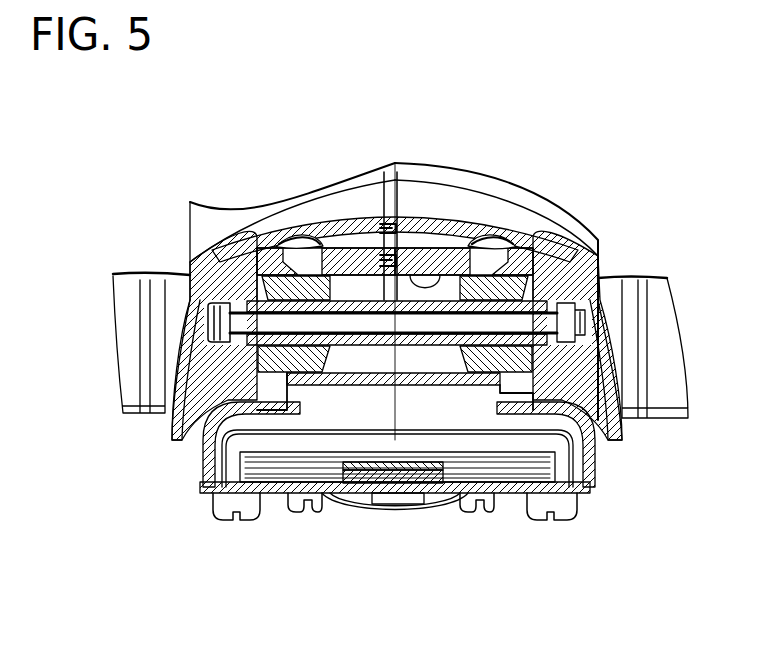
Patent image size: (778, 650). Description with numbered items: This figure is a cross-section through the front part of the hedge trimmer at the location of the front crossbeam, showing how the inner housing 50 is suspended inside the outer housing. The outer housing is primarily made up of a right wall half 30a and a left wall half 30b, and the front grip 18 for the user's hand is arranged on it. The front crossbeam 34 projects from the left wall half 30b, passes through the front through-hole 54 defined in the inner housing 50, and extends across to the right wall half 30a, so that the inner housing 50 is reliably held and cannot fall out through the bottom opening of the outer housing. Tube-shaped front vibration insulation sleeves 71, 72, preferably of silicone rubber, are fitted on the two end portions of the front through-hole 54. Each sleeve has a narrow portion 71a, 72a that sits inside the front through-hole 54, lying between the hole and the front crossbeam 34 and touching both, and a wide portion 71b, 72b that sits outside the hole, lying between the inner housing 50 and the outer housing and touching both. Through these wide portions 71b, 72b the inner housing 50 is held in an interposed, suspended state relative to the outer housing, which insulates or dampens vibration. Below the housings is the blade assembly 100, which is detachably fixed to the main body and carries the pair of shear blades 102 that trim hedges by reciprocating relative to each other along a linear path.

The front grip 18 is at (130, 272).
The right wall half 30a is at (242, 255).
The left wall half 30b is at (562, 252).
The front crossbeam 34 is at (347, 378).
The inner housing 50 is at (420, 240).
The front through-hole 54 is at (440, 275).
The front vibration insulation sleeve 71 is at (327, 123).
The narrow portion 71a is at (298, 250).
The wide portion 71b is at (282, 243).
The front vibration insulation sleeve 72 is at (559, 125).
The narrow portion 72a is at (480, 250).
The wide portion 72b is at (512, 243).
The blade assembly 100 is at (490, 532).
The shear blades 102 is at (404, 495).